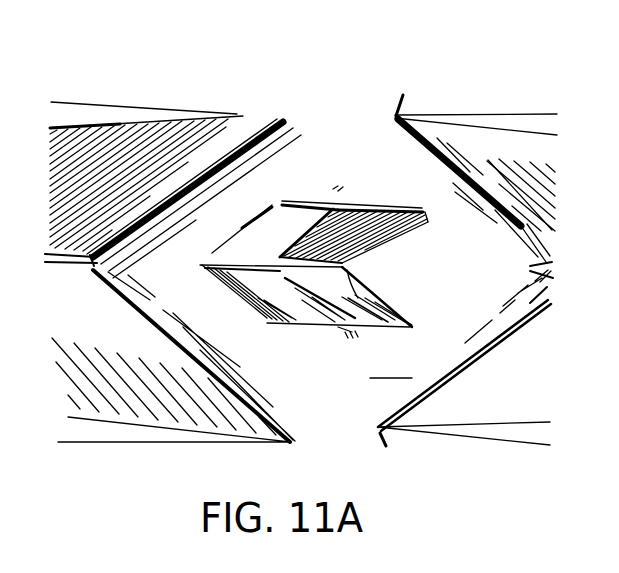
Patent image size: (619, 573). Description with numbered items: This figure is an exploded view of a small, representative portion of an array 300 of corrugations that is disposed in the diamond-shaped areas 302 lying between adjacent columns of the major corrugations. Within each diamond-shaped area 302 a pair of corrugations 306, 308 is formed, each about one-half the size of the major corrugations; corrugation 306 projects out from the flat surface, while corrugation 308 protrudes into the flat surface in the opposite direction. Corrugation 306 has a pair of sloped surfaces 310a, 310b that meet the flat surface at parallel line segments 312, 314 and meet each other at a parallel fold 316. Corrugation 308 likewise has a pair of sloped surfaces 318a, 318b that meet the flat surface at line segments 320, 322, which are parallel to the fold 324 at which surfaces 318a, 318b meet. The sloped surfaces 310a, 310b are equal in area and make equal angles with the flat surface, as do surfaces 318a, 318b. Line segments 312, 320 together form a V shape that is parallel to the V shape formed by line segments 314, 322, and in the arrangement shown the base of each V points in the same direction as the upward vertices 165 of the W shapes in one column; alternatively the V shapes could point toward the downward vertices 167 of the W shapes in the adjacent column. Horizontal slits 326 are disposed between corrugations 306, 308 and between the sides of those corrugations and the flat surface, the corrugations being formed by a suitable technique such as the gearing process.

The array of corrugations 300 is at (355, 88).
The diamond-shaped area 302 is at (391, 367).
The corrugation 306 is at (322, 193).
The corrugation 308 is at (314, 328).
The sloped surface 310a is at (408, 206).
The sloped surface 310b is at (315, 218).
The line segment 312 is at (418, 228).
The line segment 314 is at (250, 222).
The fold 316 is at (288, 254).
The sloped surface 318a is at (345, 300).
The sloped surface 318b is at (236, 273).
The line segment 320 is at (403, 322).
The line segment 322 is at (261, 310).
The fold 324 is at (347, 270).
The horizontal slits 326 is at (246, 262).
The upward vertices 165 is at (82, 266).
The downward vertices 167 is at (558, 272).